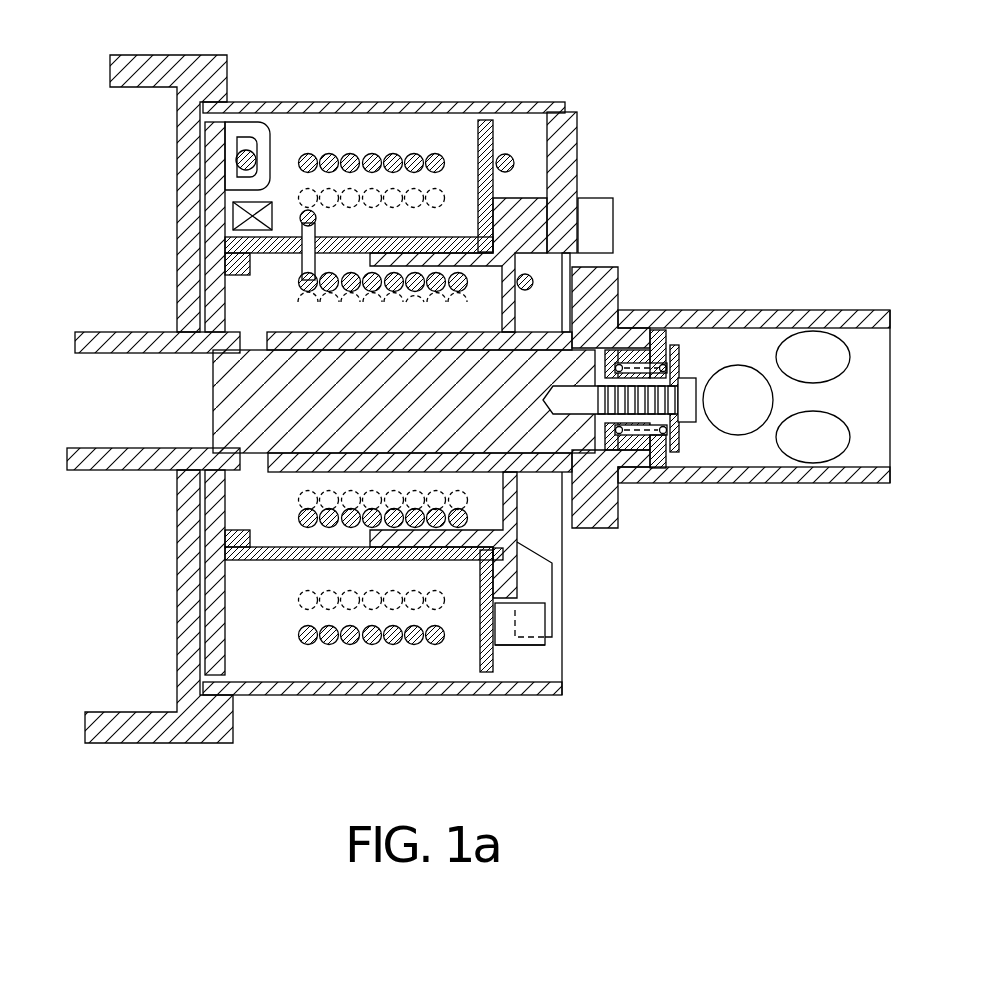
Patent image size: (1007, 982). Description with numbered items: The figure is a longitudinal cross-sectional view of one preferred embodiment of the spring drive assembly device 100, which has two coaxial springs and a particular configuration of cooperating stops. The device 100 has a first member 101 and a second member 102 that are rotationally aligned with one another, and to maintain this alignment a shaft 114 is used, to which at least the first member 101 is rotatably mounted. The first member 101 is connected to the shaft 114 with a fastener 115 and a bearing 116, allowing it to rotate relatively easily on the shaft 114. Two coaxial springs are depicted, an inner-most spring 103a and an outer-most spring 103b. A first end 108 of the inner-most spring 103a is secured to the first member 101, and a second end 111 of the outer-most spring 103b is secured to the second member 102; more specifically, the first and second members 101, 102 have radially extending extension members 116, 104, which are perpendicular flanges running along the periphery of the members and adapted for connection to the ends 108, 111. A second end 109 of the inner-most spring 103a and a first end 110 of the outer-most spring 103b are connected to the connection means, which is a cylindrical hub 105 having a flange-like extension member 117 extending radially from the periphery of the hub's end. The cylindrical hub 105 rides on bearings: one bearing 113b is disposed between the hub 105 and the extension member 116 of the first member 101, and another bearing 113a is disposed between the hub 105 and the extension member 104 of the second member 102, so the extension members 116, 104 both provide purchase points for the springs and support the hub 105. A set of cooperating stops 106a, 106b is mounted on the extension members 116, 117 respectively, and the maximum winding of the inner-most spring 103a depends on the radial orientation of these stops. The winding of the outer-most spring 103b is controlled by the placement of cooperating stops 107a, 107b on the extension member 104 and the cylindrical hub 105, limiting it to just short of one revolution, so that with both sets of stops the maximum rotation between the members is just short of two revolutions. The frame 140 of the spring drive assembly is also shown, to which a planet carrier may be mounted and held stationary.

The device 100 is at (720, 160).
The first member 101 is at (655, 308).
The second member 102 is at (118, 335).
The inner-most spring 103a is at (495, 197).
The outer-most spring 103b is at (396, 158).
The extension member 104 is at (208, 118).
The cylindrical hub 105 is at (437, 562).
The cooperating stop 106a is at (537, 582).
The cooperating stop 106b is at (543, 647).
The cooperating stop 107a is at (233, 196).
The cooperating stop 107b is at (233, 236).
The first end 108 is at (582, 240).
The second end 109 is at (303, 212).
The first end 110 is at (506, 152).
The second end 111 is at (238, 158).
The bearing 113a is at (236, 552).
The bearing 113b is at (508, 591).
The shaft 114 is at (225, 426).
The fastener 115 is at (697, 378).
The bearing / extension member 116 is at (528, 278).
The extension member 117 is at (477, 650).
The frame 140 is at (333, 100).